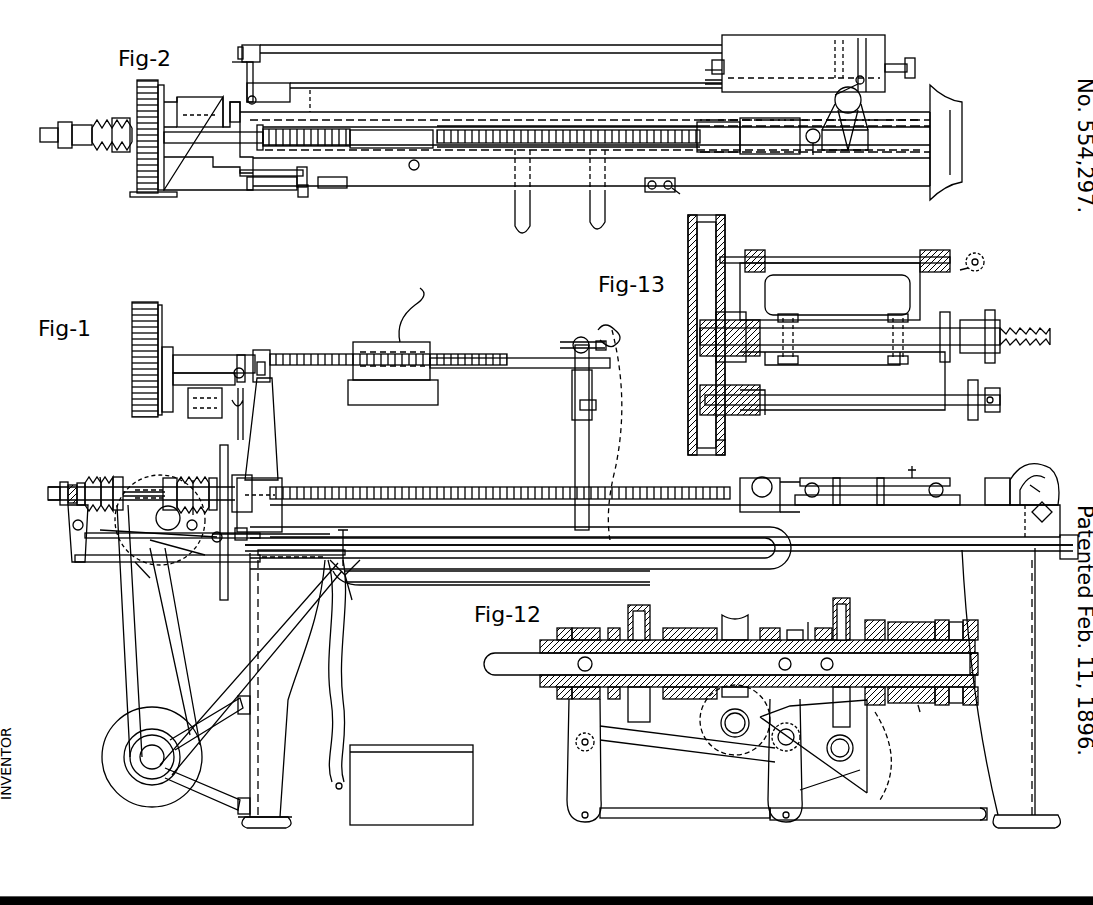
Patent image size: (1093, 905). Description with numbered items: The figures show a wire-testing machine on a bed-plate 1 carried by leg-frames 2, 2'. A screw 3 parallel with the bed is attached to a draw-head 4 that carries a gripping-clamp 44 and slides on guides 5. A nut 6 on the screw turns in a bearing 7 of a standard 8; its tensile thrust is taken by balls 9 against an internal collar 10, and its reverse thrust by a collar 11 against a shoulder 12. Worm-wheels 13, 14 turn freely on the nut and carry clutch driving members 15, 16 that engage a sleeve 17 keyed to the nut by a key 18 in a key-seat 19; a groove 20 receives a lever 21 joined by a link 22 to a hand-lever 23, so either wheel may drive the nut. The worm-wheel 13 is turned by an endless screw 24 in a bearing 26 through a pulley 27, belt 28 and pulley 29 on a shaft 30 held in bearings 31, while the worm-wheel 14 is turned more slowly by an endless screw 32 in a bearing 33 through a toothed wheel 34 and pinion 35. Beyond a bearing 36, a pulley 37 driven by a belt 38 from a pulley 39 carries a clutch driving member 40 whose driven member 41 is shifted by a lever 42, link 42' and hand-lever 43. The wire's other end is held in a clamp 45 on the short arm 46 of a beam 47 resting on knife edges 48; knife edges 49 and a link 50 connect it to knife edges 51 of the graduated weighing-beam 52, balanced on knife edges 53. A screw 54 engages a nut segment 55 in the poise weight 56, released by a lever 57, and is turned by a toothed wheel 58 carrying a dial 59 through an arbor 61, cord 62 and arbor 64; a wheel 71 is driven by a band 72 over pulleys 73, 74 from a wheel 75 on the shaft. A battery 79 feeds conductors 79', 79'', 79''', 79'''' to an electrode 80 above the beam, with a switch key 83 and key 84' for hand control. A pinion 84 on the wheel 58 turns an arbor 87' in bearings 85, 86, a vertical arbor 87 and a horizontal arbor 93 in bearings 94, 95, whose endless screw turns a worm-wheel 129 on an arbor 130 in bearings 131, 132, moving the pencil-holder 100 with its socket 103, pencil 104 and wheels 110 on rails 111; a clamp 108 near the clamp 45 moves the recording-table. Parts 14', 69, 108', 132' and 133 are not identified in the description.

In FIG. 1, the bed-plate 1 is at (659, 547).
In FIG. 1, the leg-frame 2 is at (283, 690).
In FIG. 1, the leg-frame 2' is at (1011, 688).
In FIG. 2, the screw 3 is at (560, 130).
In FIG. 1, the screw 3 is at (408, 487).
In FIG. 1, the carriage or draw-head 4 is at (755, 478).
In FIG. 2, the guides 5 is at (660, 120).
In FIG. 1, the nut 6 is at (240, 480).
In FIG. 12, the nut 6 is at (876, 706).
In FIG. 12, the bearing 7 is at (925, 711).
In FIG. 1, the standard 8 is at (236, 475).
In FIG. 12, the standard 8 is at (951, 660).
In FIG. 12, the balls 9 is at (937, 670).
In FIG. 12, the shoulder or internal collar 10 is at (966, 670).
In FIG. 12, the collar 11 is at (876, 655).
In FIG. 12, the shoulder 12 is at (900, 622).
In FIG. 1, the worm-wheel 13 is at (168, 478).
In FIG. 12, the worm-wheel 13 is at (736, 615).
In FIG. 1, the worm-wheel 14 is at (214, 513).
In FIG. 12, the shifter bar 14' is at (846, 649).
In FIG. 1, the toothed driving member of a clutch 15 is at (192, 479).
In FIG. 12, the toothed driving member of a clutch 15 is at (768, 618).
In FIG. 1, the toothed driving member of a clutch 16 is at (213, 485).
In FIG. 12, the toothed driving member of a clutch 16 is at (822, 628).
In FIG. 1, the sleeve 17 is at (202, 478).
In FIG. 12, the sleeve 17 is at (801, 613).
In FIG. 12, the key 18 is at (801, 664).
In FIG. 12, the key-seat 19 is at (714, 664).
In FIG. 12, the circumferential groove 20 is at (789, 621).
In FIG. 1, the lever 21 is at (193, 531).
In FIG. 12, the lever 21 is at (779, 760).
In FIG. 1, the link 22 is at (222, 562).
In FIG. 12, the link 22 is at (956, 808).
In FIG. 2, the hand-lever 23 is at (596, 228).
In FIG. 1, the endless screw 24 is at (180, 562).
In FIG. 12, the endless screw 24 is at (690, 732).
In FIG. 1, the bearing 26 is at (168, 532).
In FIG. 12, the bearing 26 is at (728, 748).
In FIG. 1, the pulley 27 is at (145, 485).
In FIG. 1, the belt 28 is at (160, 580).
In FIG. 1, the pulley 29 is at (102, 757).
In FIG. 1, the shaft 30 is at (130, 774).
In FIG. 1, the bearings 31 is at (215, 792).
In FIG. 1, the endless screw 32 is at (218, 545).
In FIG. 12, the endless screw 32 is at (853, 752).
In FIG. 1, the bearing 33 is at (162, 574).
In FIG. 12, the bearing 33 is at (813, 753).
In FIG. 12, the toothed wheel 34 is at (902, 762).
In FIG. 12, the pinion 35 is at (736, 737).
In FIG. 12, the bearing 36 is at (688, 628).
In FIG. 2, the pulley 37 is at (134, 170).
In FIG. 1, the pulley 37 is at (135, 420).
In FIG. 12, the pulley 37 is at (640, 605).
In FIG. 1, the belt 38 is at (130, 600).
In FIG. 1, the pulley 39 is at (152, 780).
In FIG. 2, the driving member of a clutch 40 is at (112, 150).
In FIG. 1, the driving member of a clutch 40 is at (110, 480).
In FIG. 12, the driving member of a clutch 40 is at (612, 628).
In FIG. 2, the driven member of a clutch 41 is at (82, 148).
In FIG. 1, the driven member of a clutch 41 is at (88, 486).
In FIG. 12, the driven member of a clutch 41 is at (585, 628).
In FIG. 1, the lever 42 is at (65, 533).
In FIG. 12, the lever 42 is at (578, 760).
In FIG. 12, the link 42' is at (685, 804).
In FIG. 2, the hand-lever 43 is at (518, 232).
In FIG. 2, the gripping-clamp 44 is at (748, 154).
In FIG. 1, the gripping-clamp 44 is at (790, 478).
In FIG. 2, the clamp 45 is at (935, 182).
In FIG. 1, the clamp 45 is at (992, 478).
In FIG. 1, the short vertical arm 46 is at (1052, 508).
In FIG. 1, the beam 47 is at (659, 528).
In FIG. 1, the knife edges 48 is at (1040, 470).
In FIG. 1, the knife edges 49 is at (301, 563).
In FIG. 1, the link 50 is at (236, 438).
In FIG. 1, the knife edges 51 is at (240, 355).
In FIG. 1, the graduated weighing-beam 52 is at (330, 354).
In FIG. 1, the knife edges 53 is at (264, 350).
In FIG. 2, the screw 54 is at (470, 130).
In FIG. 13, the screw 54 is at (1040, 328).
In FIG. 1, the screw 54 is at (470, 358).
In FIG. 2, the segment of a nut 55 is at (660, 150).
In FIG. 1, the segment of a nut 55 is at (438, 384).
In FIG. 2, the pea or poise weight 56 is at (405, 152).
In FIG. 1, the pea or poise weight 56 is at (380, 342).
In FIG. 1, the lever 57 is at (411, 312).
In FIG. 13, the toothed wheel 58 is at (700, 332).
In FIG. 13, the graduated dial 59 is at (726, 442).
In FIG. 2, the arbor 61 is at (230, 168).
In FIG. 13, the arbor 61 is at (882, 404).
In FIG. 1, the arbor 61 is at (188, 412).
In FIG. 1, the cord 62 is at (270, 430).
In FIG. 2, the arbor 64 is at (298, 186).
In FIG. 13, the hub 69 is at (700, 398).
In FIG. 1, the hub 69 is at (271, 533).
In FIG. 1, the wheel 71 is at (348, 540).
In FIG. 1, the cord or band 72 is at (270, 664).
In FIG. 2, the pulley 73 is at (305, 197).
In FIG. 1, the pulley 73 is at (353, 580).
In FIG. 2, the pulley 74 is at (330, 188).
In FIG. 2, the wheel 75 is at (166, 197).
In FIG. 1, the wheel 75 is at (236, 820).
In FIG. 1, the battery 79 is at (411, 785).
In FIG. 1, the conductor 79' is at (494, 648).
In FIG. 1, the insulated conductor 79'' is at (520, 612).
In FIG. 1, the insulated conductor 79''' is at (547, 575).
In FIG. 1, the insulated conductor 79'''' is at (544, 394).
In FIG. 1, the electrode 80 is at (592, 424).
In FIG. 2, the key or switch 83 is at (652, 192).
In FIG. 2, the pinion 84 is at (229, 98).
In FIG. 13, the pinion 84 is at (691, 335).
In FIG. 2, the key or switch 84' is at (687, 195).
In FIG. 2, the bearing 85 is at (180, 97).
In FIG. 13, the bearing 85 is at (758, 250).
In FIG. 2, the bearing 86 is at (243, 81).
In FIG. 13, the bearing 86 is at (1006, 268).
In FIG. 13, the vertical arbor 87 is at (973, 282).
In FIG. 13, the arbor 87' is at (835, 247).
In FIG. 2, the horizontal arbor 93 is at (262, 78).
In FIG. 2, the bearing 94 is at (259, 44).
In FIG. 2, the bearing 95 is at (275, 90).
In FIG. 2, the pencil-holder 100 is at (875, 65).
In FIG. 2, the socket 103 is at (865, 77).
In FIG. 1, the socket 103 is at (929, 464).
In FIG. 2, the pencil 104 is at (872, 100).
In FIG. 1, the pencil 104 is at (905, 478).
In FIG. 2, the clamp 108 is at (845, 141).
In FIG. 1, the clamp 108 is at (910, 503).
In FIG. 2, the roller 108' is at (806, 150).
In FIG. 1, the roller 108' is at (837, 502).
In FIG. 2, the wheels 110 is at (915, 68).
In FIG. 2, the rails 111 is at (718, 80).
In FIG. 2, the worm-wheel 129 is at (240, 47).
In FIG. 2, the arbor 130 is at (445, 45).
In FIG. 2, the bearing 131 is at (236, 62).
In FIG. 2, the bearing 132 is at (740, 56).
In FIG. 2, the block 132' is at (713, 64).
In FIG. 2, the box 133 is at (803, 63).